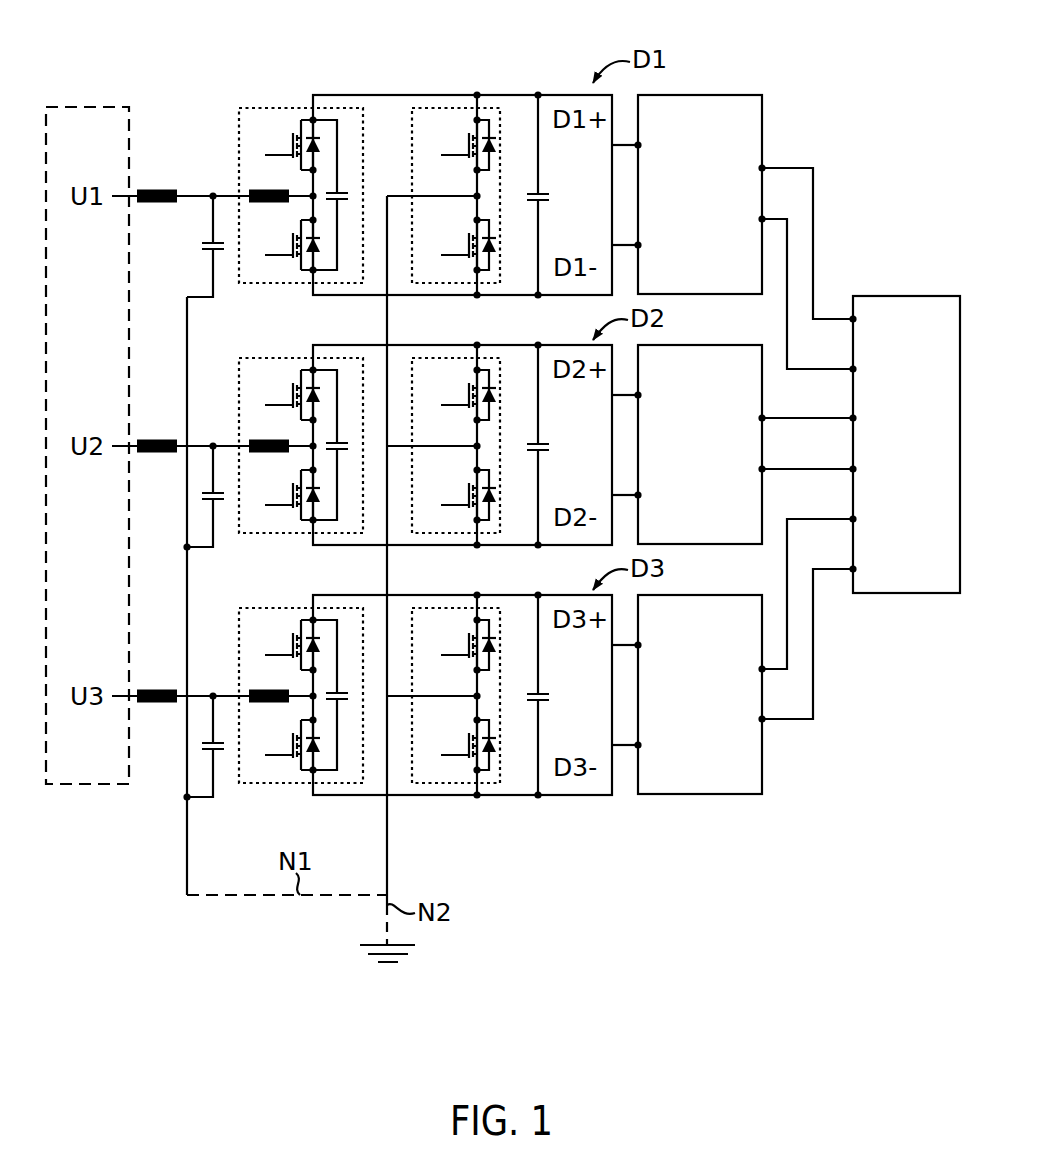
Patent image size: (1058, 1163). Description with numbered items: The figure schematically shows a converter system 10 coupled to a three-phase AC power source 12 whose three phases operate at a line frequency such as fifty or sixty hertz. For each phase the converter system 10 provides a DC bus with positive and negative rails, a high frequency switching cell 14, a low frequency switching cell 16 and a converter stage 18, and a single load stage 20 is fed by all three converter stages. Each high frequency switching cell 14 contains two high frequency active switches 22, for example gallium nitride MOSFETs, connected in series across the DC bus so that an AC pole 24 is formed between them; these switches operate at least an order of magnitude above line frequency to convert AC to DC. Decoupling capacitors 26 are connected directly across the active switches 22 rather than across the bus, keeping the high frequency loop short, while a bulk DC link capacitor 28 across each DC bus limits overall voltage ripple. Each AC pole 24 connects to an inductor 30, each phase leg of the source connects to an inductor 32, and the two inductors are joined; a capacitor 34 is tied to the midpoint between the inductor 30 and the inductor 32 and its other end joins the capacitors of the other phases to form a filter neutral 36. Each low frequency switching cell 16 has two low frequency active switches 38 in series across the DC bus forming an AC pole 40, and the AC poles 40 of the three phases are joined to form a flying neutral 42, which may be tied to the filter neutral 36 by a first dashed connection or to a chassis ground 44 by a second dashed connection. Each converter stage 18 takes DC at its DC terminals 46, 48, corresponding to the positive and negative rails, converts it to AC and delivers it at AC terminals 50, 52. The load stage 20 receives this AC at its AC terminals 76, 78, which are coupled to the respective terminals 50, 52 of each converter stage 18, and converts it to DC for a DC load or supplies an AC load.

The converter system 10 is at (785, 40).
The three-phase AC power source 12 is at (86, 107).
The high frequency switching cell 14 is at (268, 107).
The low frequency switching cell 16 is at (440, 108).
The converter stage 18 is at (700, 444).
The load stage 20 is at (906, 444).
The high frequency active switches 22 is at (262, 135).
The AC pole 24 is at (303, 198).
The decoupling capacitors 26 is at (343, 188).
The bulk DC link capacitor 28 is at (542, 192).
The inductor 30 is at (262, 190).
The inductor 32 is at (160, 189).
The capacitor 34 is at (210, 256).
The filter neutral 36 is at (187, 840).
The low frequency active switches 38 is at (445, 145).
The AC pole 40 is at (470, 200).
The flying neutral 42 is at (387, 840).
The chassis ground 44 is at (365, 965).
The DC terminal 46 is at (640, 145).
The DC terminal 48 is at (640, 246).
The AC terminal 50 is at (765, 167).
The AC terminal 52 is at (765, 218).
The AC terminal 76 is at (852, 318).
The AC terminal 78 is at (852, 368).